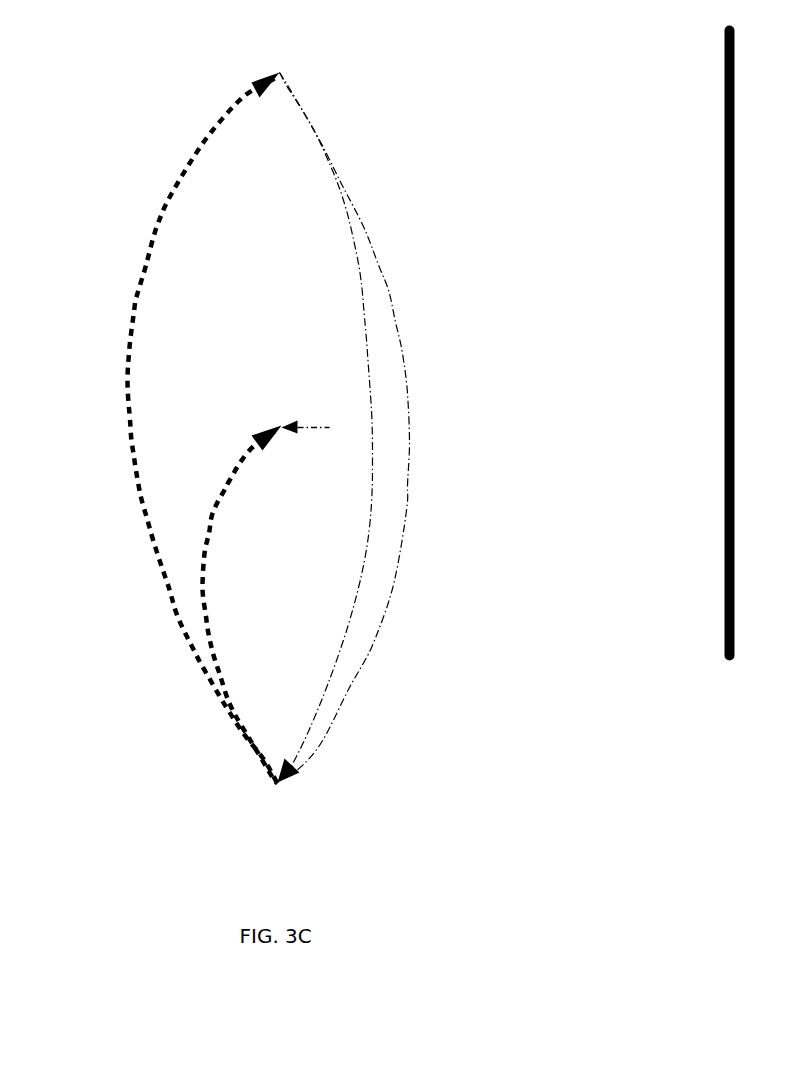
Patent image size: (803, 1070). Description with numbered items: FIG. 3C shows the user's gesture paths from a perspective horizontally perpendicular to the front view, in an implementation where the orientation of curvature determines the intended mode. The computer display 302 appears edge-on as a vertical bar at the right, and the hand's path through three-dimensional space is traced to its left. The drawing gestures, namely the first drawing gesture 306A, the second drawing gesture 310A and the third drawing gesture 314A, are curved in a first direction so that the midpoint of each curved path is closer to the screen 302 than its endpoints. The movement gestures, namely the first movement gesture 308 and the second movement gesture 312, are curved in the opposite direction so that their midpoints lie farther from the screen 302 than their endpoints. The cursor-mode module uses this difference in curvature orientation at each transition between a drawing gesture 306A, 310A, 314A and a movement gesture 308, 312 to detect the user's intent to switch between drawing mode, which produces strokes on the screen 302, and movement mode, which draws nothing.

The computer display 302 is at (725, 375).
The first drawing gesture 306A is at (345, 220).
The first movement gesture 308 is at (137, 290).
The second drawing gesture 310A is at (390, 290).
The second movement gesture 312 is at (205, 575).
The third drawing gesture 314A is at (317, 427).